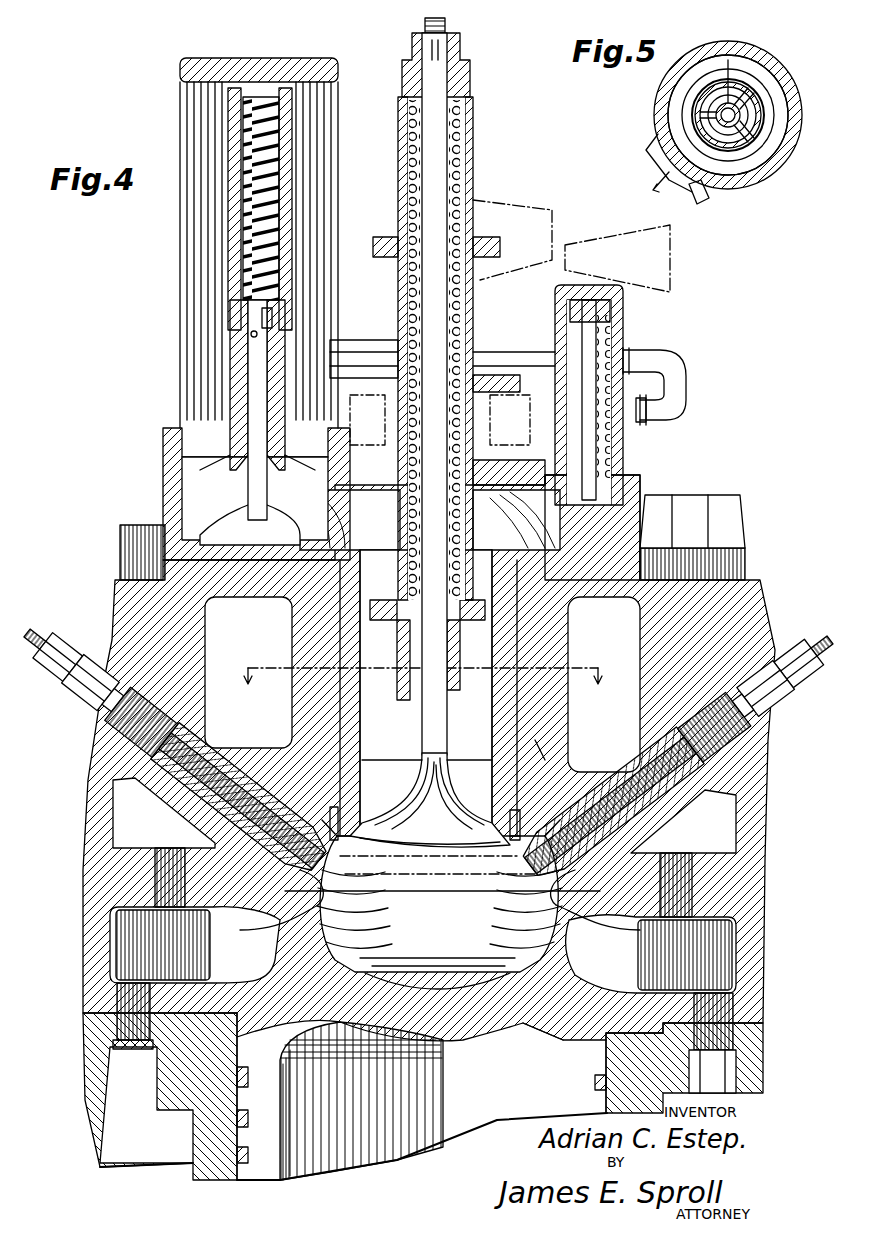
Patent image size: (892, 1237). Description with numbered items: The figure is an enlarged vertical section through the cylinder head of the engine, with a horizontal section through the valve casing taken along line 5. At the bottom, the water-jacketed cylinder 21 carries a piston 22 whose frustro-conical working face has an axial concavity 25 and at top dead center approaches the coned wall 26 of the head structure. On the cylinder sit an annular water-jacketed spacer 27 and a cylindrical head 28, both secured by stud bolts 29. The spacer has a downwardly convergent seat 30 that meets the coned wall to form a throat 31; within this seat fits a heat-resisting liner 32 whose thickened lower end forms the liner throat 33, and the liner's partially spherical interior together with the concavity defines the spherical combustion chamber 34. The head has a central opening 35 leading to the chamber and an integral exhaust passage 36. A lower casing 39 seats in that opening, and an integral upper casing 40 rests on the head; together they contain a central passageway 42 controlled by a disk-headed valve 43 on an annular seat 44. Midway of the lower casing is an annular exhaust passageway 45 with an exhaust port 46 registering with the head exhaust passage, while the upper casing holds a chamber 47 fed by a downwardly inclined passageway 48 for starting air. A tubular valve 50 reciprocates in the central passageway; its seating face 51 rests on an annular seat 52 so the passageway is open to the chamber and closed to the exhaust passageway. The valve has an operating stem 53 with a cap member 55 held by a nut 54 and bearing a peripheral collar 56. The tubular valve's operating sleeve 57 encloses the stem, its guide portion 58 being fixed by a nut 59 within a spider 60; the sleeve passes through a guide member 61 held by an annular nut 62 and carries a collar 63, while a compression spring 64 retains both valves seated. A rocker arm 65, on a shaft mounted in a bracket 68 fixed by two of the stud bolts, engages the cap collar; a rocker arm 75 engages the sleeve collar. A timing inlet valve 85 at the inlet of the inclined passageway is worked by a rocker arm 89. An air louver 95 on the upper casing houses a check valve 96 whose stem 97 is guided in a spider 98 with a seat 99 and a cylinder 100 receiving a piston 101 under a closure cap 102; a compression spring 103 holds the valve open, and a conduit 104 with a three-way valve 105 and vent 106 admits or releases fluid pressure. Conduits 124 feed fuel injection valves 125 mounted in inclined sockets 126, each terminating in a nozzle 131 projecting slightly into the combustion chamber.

In FIG. 4, the engine cylinder 21 is at (200, 1150).
In FIG. 4, the piston 22 is at (400, 1165).
In FIG. 4, the concavity 25 is at (438, 1055).
In FIG. 4, the coned wall 26 is at (652, 950).
In FIG. 4, the annular spacer 27 is at (95, 940).
In FIG. 4, the cylinder head 28 is at (108, 805).
In FIG. 5, the cylinder head 28 is at (655, 97).
In FIG. 4, the stud bolts 29 is at (122, 520).
In FIG. 4, the downwardly convergent seat 30 is at (307, 950).
In FIG. 4, the throat 31 is at (560, 1050).
In FIG. 4, the liner 32 is at (640, 930).
In FIG. 4, the liner throat 33 is at (465, 1000).
In FIG. 4, the combustion chamber 34 is at (437, 920).
In FIG. 4, the central opening 35 is at (555, 712).
In FIG. 5, the central opening 35 is at (774, 60).
In FIG. 5, the exhaust passage 36 is at (707, 198).
In FIG. 4, the lower casing 39 is at (560, 630).
In FIG. 5, the lower casing 39 is at (764, 90).
In FIG. 4, the upper casing 40 is at (620, 485).
In FIG. 4, the central passageway 42 is at (333, 527).
In FIG. 4, the valve 43 is at (500, 850).
In FIG. 5, the valve 43 is at (761, 123).
In FIG. 4, the annular seat 44 is at (480, 830).
In FIG. 4, the annular exhaust passageway 45 is at (397, 655).
In FIG. 5, the annular exhaust passageway 45 is at (760, 150).
In FIG. 5, the exhaust port 46 is at (656, 152).
In FIG. 4, the chamber 47 is at (350, 600).
In FIG. 4, the inclined passageway 48 is at (538, 531).
In FIG. 4, the tubular valve 50 is at (515, 470).
In FIG. 5, the tubular valve 50 is at (702, 123).
In FIG. 4, the seating face 51 is at (488, 692).
In FIG. 4, the annular seat 52 is at (545, 755).
In FIG. 4, the operating stem 53 is at (473, 330).
In FIG. 5, the operating stem 53 is at (717, 148).
In FIG. 4, the nut 54 is at (462, 45).
In FIG. 4, the cap member 55 is at (462, 130).
In FIG. 4, the peripheral collar 56 is at (385, 237).
In FIG. 4, the operating sleeve 57 is at (422, 300).
In FIG. 4, the guide portion 58 is at (387, 650).
In FIG. 5, the guide portion 58 is at (724, 60).
In FIG. 4, the nut 59 is at (427, 765).
In FIG. 4, the spider 60 is at (466, 645).
In FIG. 5, the spider 60 is at (742, 108).
In FIG. 4, the guide member 61 is at (500, 400).
In FIG. 4, the annular nut 62 is at (500, 425).
In FIG. 4, the peripheral collar 63 is at (480, 375).
In FIG. 4, the compression spring 64 is at (473, 175).
In FIG. 4, the rocker arm 65 is at (520, 215).
In FIG. 4, the bracket 68 is at (700, 495).
In FIG. 4, the rocker arm 75 is at (355, 395).
In FIG. 4, the timing inlet valve 85 is at (623, 330).
In FIG. 4, the rocker arm 89 is at (672, 268).
In FIG. 4, the air louver 95 is at (180, 110).
In FIG. 4, the check valve 96 is at (235, 522).
In FIG. 4, the stem 97 is at (250, 370).
In FIG. 4, the spider 98 is at (235, 390).
In FIG. 4, the seat 99 is at (165, 450).
In FIG. 4, the cylinder 100 is at (245, 335).
In FIG. 4, the piston 101 is at (265, 320).
In FIG. 4, the closure cap 102 is at (232, 190).
In FIG. 4, the compression spring 103 is at (243, 130).
In FIG. 4, the conduit 104 is at (365, 350).
In FIG. 4, the three-way valve 105 is at (644, 418).
In FIG. 4, the vent 106 is at (690, 378).
In FIG. 4, the conduits 124 is at (40, 628).
In FIG. 4, the fuel injection valves 125 is at (424, 815).
In FIG. 4, the sockets 126 is at (145, 793).
In FIG. 4, the nozzle 131 is at (396, 908).
In FIG. 4, the section line 5- 5 is at (426, 684).